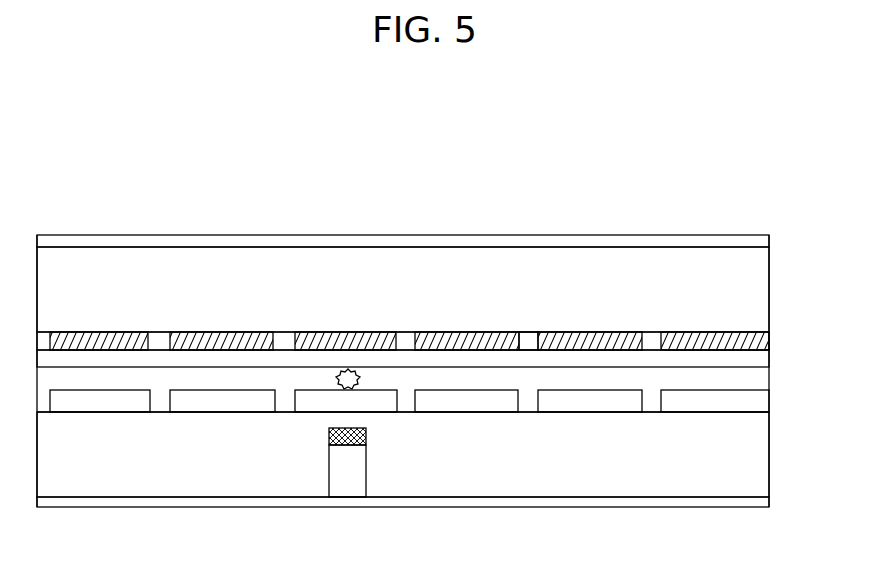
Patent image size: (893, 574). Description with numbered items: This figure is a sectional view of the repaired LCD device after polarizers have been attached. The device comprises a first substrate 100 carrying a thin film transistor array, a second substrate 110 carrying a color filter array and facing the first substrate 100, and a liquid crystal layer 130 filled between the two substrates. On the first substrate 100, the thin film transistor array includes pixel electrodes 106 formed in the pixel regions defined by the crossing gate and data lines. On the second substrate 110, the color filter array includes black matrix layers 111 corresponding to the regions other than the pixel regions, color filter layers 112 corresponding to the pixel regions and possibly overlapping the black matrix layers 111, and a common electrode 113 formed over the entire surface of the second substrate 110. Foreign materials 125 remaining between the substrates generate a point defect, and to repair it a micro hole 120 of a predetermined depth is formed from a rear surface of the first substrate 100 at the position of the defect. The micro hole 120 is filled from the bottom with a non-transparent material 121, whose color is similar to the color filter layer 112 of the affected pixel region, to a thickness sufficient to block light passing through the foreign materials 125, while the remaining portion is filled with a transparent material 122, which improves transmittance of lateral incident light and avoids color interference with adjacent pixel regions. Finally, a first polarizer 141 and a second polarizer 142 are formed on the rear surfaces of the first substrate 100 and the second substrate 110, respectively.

The first substrate 100 is at (767, 465).
The pixel electrodes 106 is at (760, 402).
The second substrate 110 is at (766, 290).
The black matrix layers 111 is at (533, 345).
The color filter layers 112 is at (769, 336).
The common electrode 113 is at (769, 357).
The micro hole 120 is at (299, 490).
The non-transparent material 121 is at (329, 440).
The transparent material 122 is at (335, 470).
The foreign materials 125 is at (355, 368).
The liquid crystal layer 130 is at (760, 383).
The first polarizer 141 is at (769, 237).
The second polarizer 142 is at (769, 500).